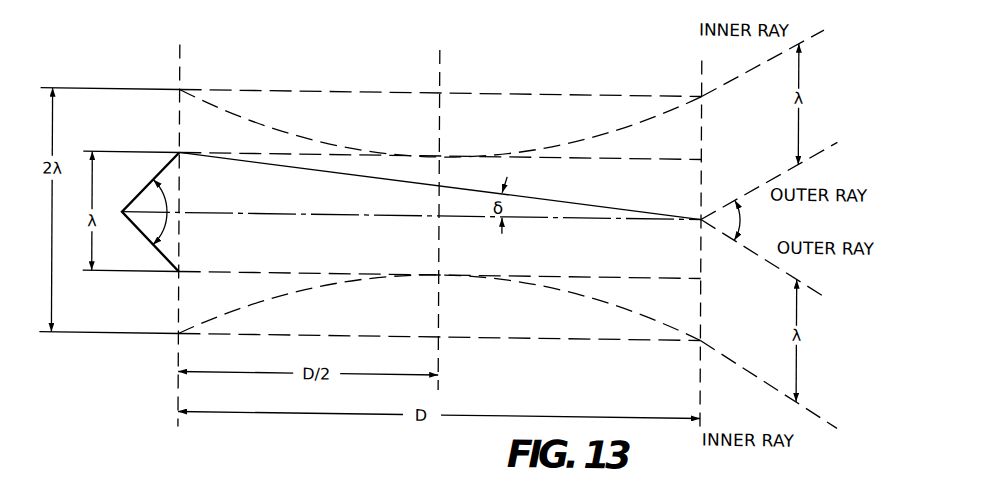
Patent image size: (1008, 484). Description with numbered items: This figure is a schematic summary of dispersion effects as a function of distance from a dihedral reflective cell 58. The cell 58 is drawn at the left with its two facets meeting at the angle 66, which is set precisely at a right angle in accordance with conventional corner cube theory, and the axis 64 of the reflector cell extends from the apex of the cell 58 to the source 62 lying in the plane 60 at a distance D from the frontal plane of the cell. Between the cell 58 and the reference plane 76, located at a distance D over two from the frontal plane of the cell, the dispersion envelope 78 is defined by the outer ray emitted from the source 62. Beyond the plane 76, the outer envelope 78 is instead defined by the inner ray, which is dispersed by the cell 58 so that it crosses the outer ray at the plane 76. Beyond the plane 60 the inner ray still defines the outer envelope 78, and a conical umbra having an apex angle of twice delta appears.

The dihedral reflector cell 58 is at (134, 203).
The angle between the facets 66 is at (168, 205).
The axis of the reflector cell 64 is at (399, 217).
The source 62 is at (699, 220).
The plane of source 60 is at (702, 405).
The reference plane 76 is at (440, 388).
The dispersion envelope 78 is at (263, 125).